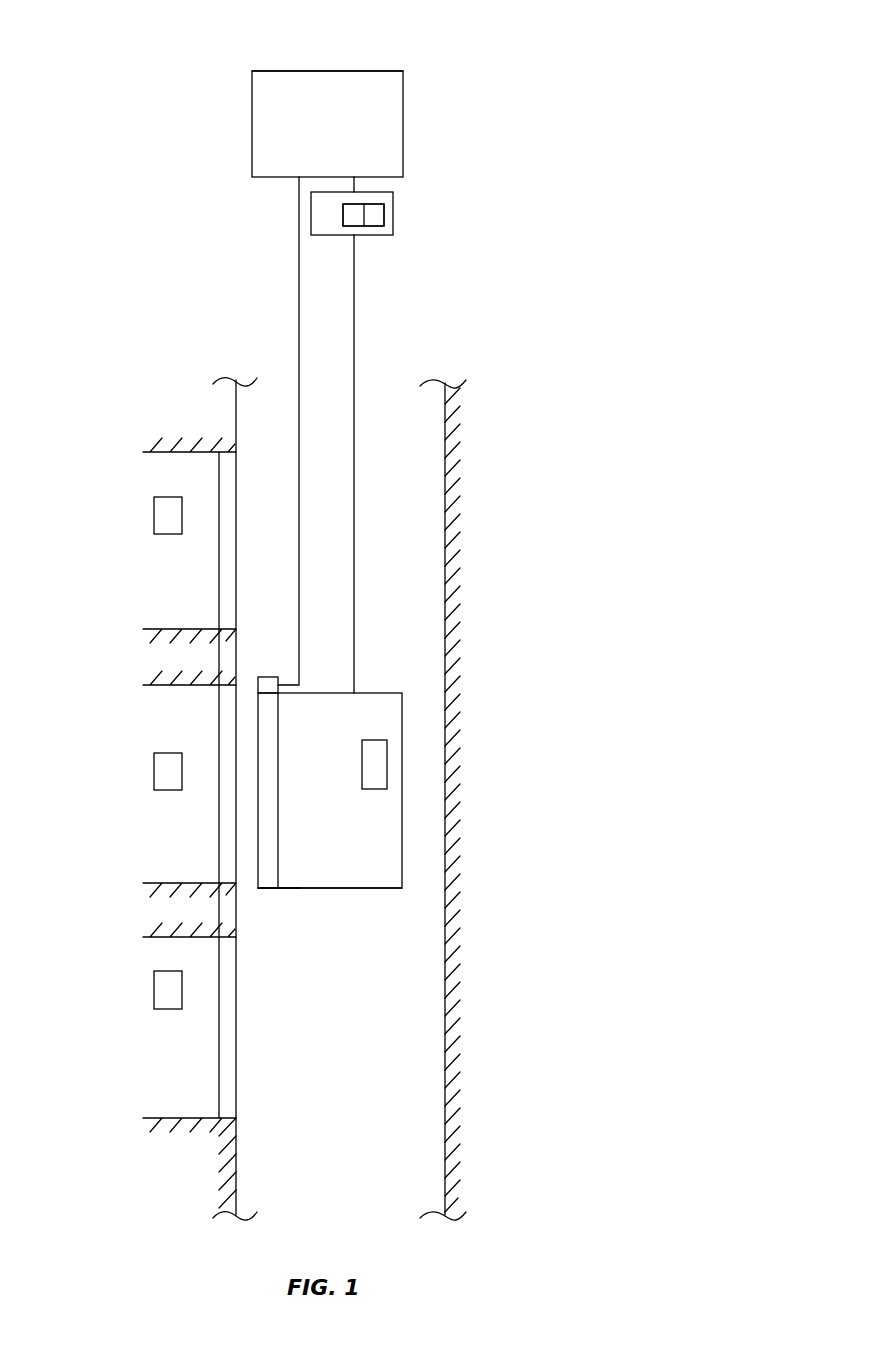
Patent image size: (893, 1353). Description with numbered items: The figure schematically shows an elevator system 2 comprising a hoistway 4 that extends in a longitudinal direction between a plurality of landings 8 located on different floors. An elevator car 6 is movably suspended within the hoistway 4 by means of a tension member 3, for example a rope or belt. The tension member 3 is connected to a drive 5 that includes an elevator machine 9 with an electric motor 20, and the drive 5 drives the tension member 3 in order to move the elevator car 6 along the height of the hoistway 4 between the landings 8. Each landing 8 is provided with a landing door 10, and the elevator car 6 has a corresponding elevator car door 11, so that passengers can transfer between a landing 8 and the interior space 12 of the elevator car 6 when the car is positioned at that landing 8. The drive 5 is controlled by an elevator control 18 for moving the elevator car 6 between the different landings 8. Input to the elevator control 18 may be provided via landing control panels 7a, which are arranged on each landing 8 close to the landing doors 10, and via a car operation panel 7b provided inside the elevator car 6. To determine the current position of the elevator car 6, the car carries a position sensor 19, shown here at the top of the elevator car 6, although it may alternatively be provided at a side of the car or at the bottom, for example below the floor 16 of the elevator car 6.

The elevator system 2 is at (463, 53).
The tension member 3 is at (356, 290).
The hoistway 4 is at (396, 398).
The drive 5 is at (331, 236).
The elevator car 6 is at (355, 892).
The landing control panel 7a is at (160, 515).
The car operation panel 7b is at (370, 767).
The landing 8 is at (127, 603).
The elevator machine 9 is at (377, 205).
The landing door 10 is at (224, 577).
The elevator car door 11 is at (272, 725).
The interior space 12 is at (367, 712).
The floor 16 is at (302, 888).
The elevator control 18 is at (262, 130).
The position sensor 19 is at (268, 677).
The electric motor 20 is at (378, 213).